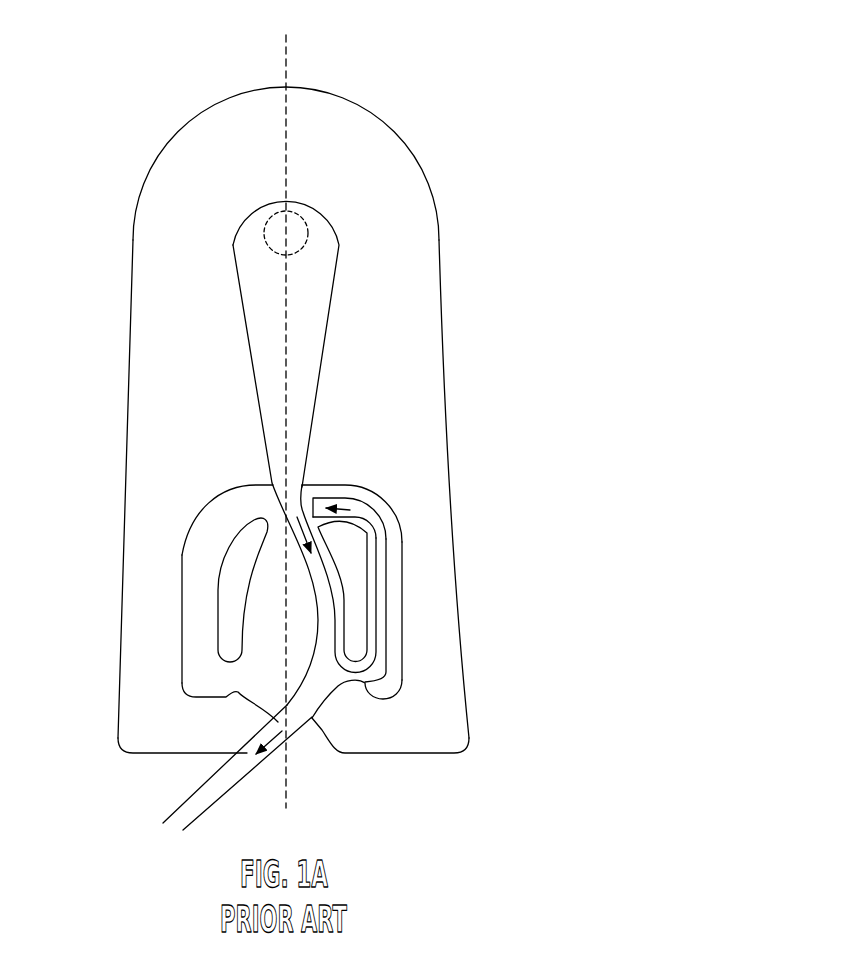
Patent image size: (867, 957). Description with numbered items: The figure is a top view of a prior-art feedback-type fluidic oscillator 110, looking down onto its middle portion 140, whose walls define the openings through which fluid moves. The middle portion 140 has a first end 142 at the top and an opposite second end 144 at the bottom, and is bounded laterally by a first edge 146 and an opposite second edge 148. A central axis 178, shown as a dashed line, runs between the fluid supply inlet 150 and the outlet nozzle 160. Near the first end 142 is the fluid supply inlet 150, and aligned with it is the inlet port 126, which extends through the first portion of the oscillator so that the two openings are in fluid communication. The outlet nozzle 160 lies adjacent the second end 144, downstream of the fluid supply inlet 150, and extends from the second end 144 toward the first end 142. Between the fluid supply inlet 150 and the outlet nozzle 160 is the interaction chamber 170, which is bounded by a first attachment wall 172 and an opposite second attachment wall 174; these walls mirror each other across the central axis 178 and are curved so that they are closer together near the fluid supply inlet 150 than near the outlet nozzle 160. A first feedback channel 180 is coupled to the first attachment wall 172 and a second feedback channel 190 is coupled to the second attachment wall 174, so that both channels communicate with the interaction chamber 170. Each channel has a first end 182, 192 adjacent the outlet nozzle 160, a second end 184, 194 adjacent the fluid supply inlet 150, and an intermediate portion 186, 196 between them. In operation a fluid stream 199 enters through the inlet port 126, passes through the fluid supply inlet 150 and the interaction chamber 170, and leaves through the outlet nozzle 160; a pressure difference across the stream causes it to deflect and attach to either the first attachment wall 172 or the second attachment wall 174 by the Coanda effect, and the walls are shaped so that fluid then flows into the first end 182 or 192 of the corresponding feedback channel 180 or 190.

The feedback-type fluidic oscillator 110 is at (447, 137).
The inlet port 126 is at (273, 217).
The middle portion 140 is at (454, 250).
The first end 142 is at (300, 84).
The second end 144 is at (397, 755).
The first edge 146 is at (128, 407).
The second edge 148 is at (452, 406).
The fluid supply inlet 150 is at (273, 272).
The outlet nozzle 160 is at (295, 738).
The interaction chamber 170 is at (263, 582).
The first attachment wall 172 is at (238, 598).
The second attachment wall 174 is at (343, 587).
The central axis 178 is at (275, 77).
The first feedback channel 180 is at (168, 602).
The first end of first feedback channel 182 is at (222, 683).
The second end of first feedback channel 184 is at (254, 508).
The intermediate portion of first feedback channel 186 is at (198, 612).
The second feedback channel 190 is at (408, 596).
The first end of second feedback channel 192 is at (375, 685).
The second end of second feedback channel 194 is at (332, 492).
The intermediate portion of second feedback channel 196 is at (382, 612).
The fluid stream 199 is at (323, 680).